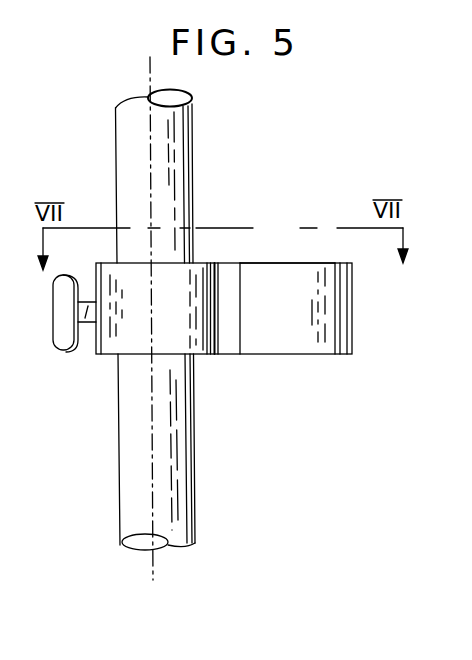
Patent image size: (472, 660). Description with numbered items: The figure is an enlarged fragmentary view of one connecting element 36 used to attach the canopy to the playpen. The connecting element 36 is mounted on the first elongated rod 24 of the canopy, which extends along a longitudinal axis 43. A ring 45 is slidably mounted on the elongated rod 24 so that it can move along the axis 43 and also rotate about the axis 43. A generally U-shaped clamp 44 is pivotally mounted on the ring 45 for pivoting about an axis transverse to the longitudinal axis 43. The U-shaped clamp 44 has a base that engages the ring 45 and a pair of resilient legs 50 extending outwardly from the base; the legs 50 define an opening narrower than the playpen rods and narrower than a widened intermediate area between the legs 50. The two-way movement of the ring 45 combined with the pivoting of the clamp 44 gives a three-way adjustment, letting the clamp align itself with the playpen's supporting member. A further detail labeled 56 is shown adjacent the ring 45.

The first elongated rod 24 is at (188, 187).
The connecting element 36 is at (298, 371).
The longitudinal axis 43 is at (157, 553).
The U-shaped clamp 44 is at (360, 354).
The ring 45 is at (112, 348).
The resilient legs 50 is at (252, 342).
The clamp knob 56 is at (87, 302).